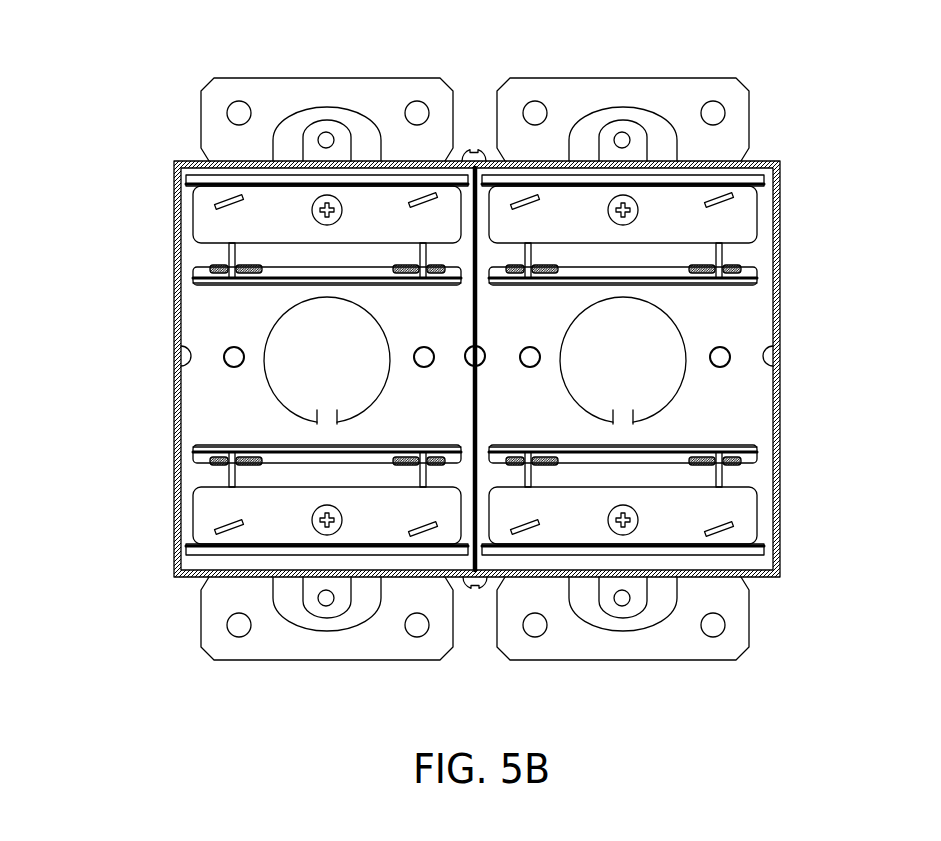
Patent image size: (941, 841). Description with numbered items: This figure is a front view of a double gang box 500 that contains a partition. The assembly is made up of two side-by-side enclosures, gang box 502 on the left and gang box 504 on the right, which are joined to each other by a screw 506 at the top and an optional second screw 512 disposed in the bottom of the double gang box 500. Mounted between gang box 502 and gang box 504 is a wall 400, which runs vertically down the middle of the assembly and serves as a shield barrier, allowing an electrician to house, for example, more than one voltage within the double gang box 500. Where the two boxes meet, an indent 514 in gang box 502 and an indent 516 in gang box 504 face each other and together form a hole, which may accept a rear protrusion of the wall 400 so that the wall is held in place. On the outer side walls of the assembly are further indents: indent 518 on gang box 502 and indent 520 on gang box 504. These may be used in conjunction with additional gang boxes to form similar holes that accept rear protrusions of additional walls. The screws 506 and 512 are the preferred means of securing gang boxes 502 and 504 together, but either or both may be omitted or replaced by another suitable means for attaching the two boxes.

The double gang box 500 is at (403, 347).
The gang box 502 is at (197, 323).
The gang box 504 is at (745, 315).
The wall 400 is at (477, 328).
The screw 506 is at (472, 140).
The second screw 512 is at (477, 597).
The indent 514 is at (467, 358).
The indent 516 is at (485, 358).
The indent 518 is at (175, 357).
The indent 520 is at (780, 358).